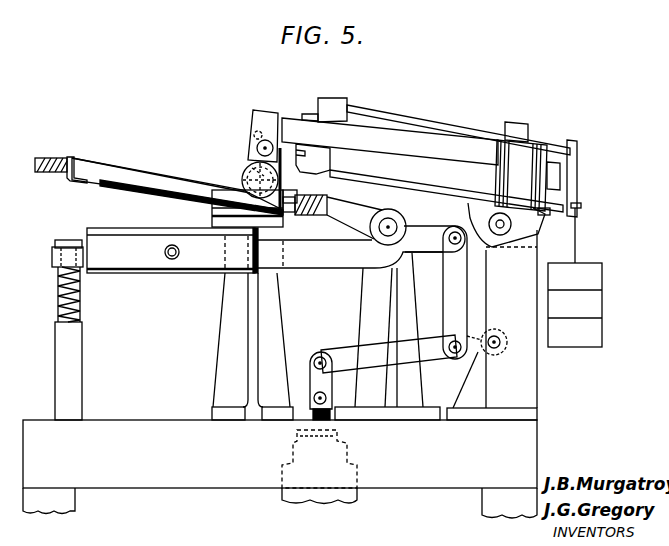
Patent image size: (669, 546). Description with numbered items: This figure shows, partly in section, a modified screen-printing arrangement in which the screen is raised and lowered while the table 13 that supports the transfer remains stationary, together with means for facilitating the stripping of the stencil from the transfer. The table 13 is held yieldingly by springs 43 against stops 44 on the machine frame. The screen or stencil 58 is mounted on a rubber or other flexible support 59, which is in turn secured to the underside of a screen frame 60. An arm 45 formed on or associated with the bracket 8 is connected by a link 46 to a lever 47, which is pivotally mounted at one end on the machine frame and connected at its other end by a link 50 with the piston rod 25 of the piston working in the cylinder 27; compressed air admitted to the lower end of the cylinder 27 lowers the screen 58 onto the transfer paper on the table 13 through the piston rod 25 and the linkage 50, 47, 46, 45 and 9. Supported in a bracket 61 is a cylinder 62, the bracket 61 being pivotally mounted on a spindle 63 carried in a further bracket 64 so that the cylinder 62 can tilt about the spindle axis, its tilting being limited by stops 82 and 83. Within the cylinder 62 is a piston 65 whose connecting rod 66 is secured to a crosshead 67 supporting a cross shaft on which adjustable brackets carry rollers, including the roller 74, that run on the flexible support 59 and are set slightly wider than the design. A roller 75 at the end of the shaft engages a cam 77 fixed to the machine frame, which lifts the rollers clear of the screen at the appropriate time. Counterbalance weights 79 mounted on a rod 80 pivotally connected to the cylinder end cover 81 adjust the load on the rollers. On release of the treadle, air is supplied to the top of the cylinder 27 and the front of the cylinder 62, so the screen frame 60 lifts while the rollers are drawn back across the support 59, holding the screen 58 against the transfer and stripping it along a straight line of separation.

The bracket 8 is at (343, 214).
The linkage member 9 is at (389, 226).
The table 13 is at (194, 273).
The piston rod 25 is at (310, 424).
The cylinder 27 is at (283, 495).
The springs 43 is at (58, 284).
The stops 44 is at (63, 360).
The arm 45 is at (471, 224).
The link 46 is at (455, 295).
The lever 47 is at (347, 351).
The link 50 is at (316, 383).
The screen or stencil 58 is at (145, 190).
The flexible support 59 is at (100, 188).
The screen frame 60 is at (68, 157).
The bracket 61 is at (513, 122).
The cylinder 62 is at (451, 124).
The spindle 63 is at (501, 234).
The bracket 64 is at (527, 375).
The piston 65 is at (527, 160).
The connecting rod 66 is at (352, 135).
The crosshead 67 is at (267, 112).
The roller 74 is at (247, 178).
The roller 75 is at (256, 133).
The cam 77 is at (247, 163).
The counterbalance weights 79 is at (572, 338).
The rod 80 is at (578, 234).
The cylinder end cover 81 is at (578, 156).
The stop 82 is at (470, 200).
The stop 83 is at (546, 209).